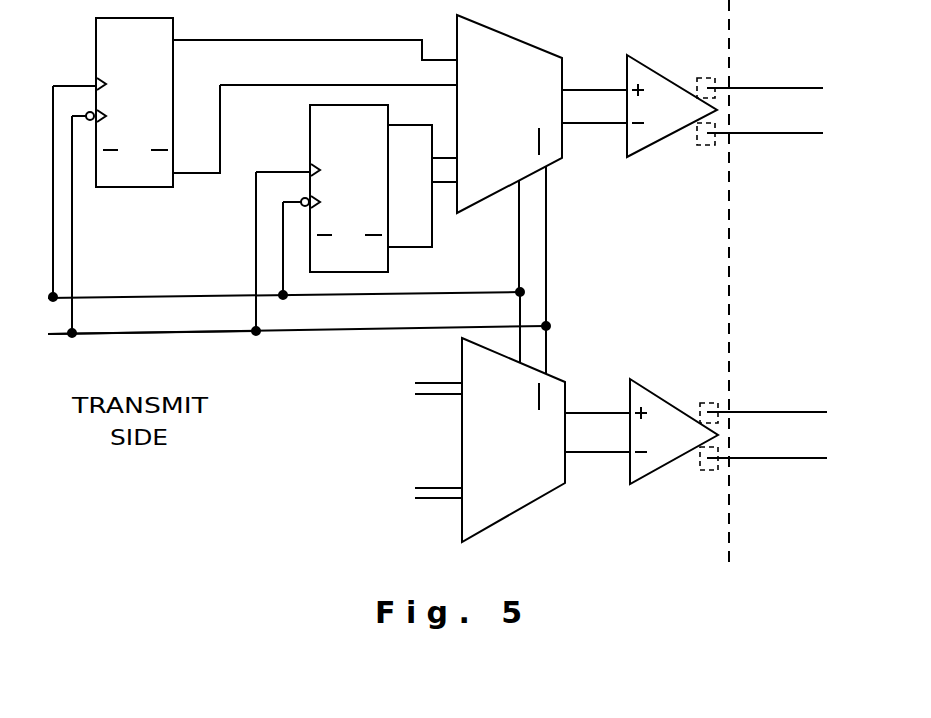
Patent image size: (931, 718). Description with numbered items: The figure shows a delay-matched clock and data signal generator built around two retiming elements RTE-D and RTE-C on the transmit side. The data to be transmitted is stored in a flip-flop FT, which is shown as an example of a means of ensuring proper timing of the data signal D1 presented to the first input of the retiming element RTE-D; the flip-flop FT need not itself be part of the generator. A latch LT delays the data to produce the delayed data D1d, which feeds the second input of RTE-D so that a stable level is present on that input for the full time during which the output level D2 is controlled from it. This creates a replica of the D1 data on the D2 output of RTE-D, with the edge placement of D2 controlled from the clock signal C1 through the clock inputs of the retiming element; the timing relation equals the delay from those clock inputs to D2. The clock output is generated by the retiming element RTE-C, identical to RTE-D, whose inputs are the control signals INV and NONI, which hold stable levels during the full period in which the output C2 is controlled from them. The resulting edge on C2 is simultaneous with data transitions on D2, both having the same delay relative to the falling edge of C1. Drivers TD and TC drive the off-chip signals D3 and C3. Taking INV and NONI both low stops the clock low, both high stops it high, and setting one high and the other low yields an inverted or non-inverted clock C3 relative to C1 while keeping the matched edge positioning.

The flip-flop FT is at (129, 102).
The latch LT is at (344, 188).
The retiming element RTE-D is at (509, 170).
The retiming element RTE-C is at (513, 417).
The driver TD is at (672, 114).
The driver TC is at (674, 438).
The data signal D1 is at (315, 129).
The delayed data signal D1d is at (424, 172).
The data output D2 is at (594, 108).
The off-chip data signal D3 is at (760, 111).
The clock signal C1 is at (152, 317).
The clock output C2 is at (597, 432).
The off-chip clock signal C3 is at (763, 436).
The control signal INV is at (410, 387).
The control signal NONI is at (402, 490).